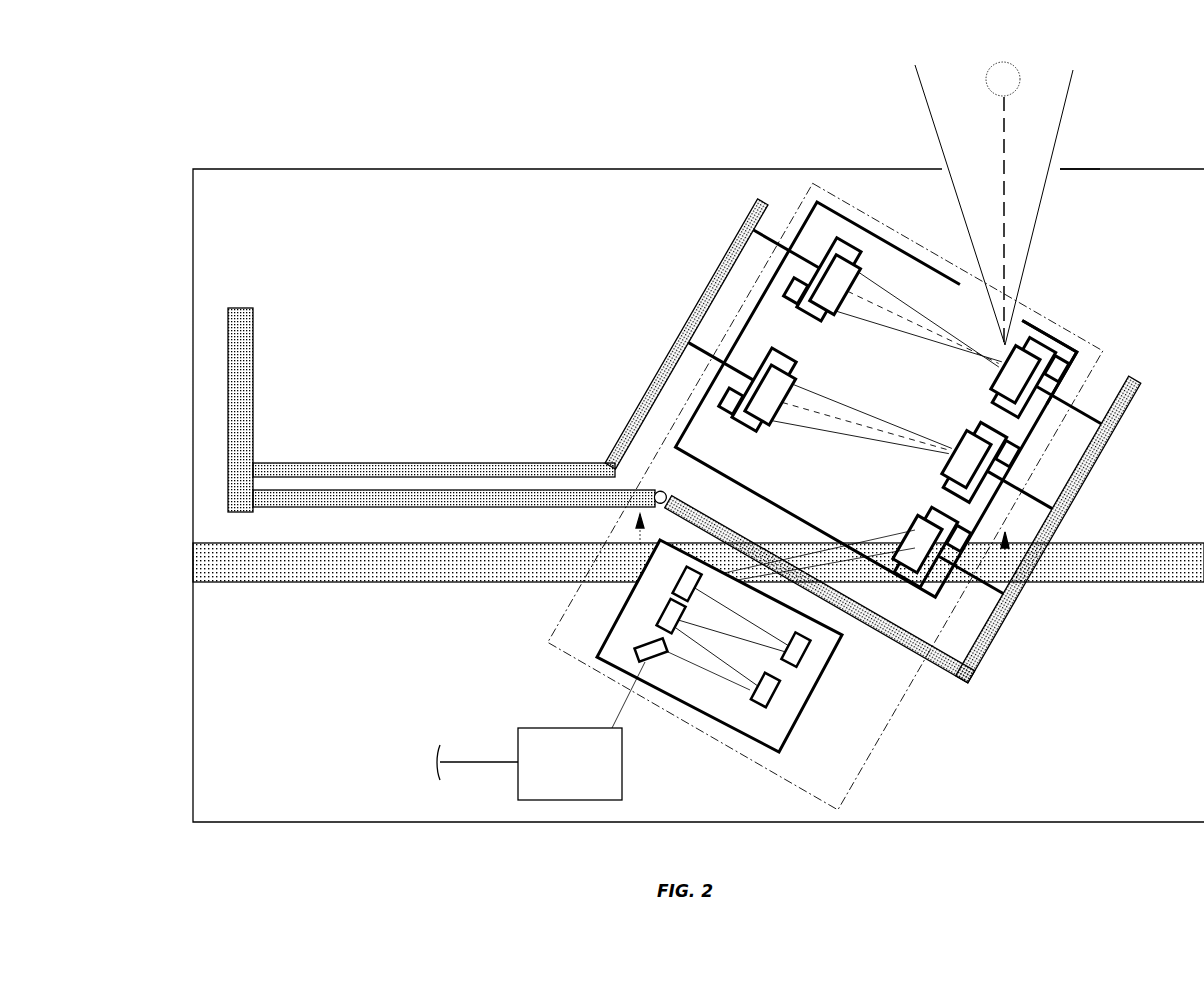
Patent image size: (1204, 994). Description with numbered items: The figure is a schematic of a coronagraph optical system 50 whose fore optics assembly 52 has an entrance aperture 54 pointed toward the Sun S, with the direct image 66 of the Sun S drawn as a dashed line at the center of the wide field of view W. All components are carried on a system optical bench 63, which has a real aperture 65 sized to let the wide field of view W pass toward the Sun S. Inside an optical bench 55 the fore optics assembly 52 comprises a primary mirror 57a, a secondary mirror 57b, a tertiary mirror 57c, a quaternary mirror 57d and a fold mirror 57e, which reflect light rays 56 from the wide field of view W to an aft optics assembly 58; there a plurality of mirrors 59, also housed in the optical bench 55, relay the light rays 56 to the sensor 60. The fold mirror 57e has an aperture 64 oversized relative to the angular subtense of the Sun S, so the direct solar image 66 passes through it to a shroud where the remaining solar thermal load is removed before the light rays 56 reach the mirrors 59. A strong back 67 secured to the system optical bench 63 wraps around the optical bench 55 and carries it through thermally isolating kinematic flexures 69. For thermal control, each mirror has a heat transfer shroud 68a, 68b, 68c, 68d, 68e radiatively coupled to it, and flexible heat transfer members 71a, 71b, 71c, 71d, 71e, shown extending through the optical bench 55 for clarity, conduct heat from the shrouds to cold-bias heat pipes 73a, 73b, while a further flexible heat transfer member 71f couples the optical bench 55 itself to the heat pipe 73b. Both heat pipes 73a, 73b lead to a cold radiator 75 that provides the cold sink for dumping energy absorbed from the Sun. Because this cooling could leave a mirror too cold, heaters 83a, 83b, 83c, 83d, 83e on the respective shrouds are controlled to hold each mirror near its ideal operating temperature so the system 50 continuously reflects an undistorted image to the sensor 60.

The coronagraph optical system 50 is at (535, 124).
The fore optics assembly 52 is at (908, 252).
The entrance aperture 54 is at (1082, 290).
The optical bench 55 is at (563, 637).
The light rays 56 is at (942, 148).
The primary mirror 57a is at (1088, 379).
The secondary mirror 57b is at (756, 248).
The tertiary mirror 57c is at (1069, 515).
The quaternary mirror 57d is at (692, 359).
The fold mirror 57e is at (1022, 611).
The aft optics assembly 58 is at (731, 673).
The aft optics mirrors 59 is at (616, 632).
The sensor 60 is at (518, 736).
The system optical bench 63 is at (332, 169).
The aperture 64 is at (905, 637).
The real aperture 65 is at (1062, 172).
The direct image of the Sun 66 is at (1008, 216).
The strong back 67 is at (260, 582).
The heat transfer shroud 68a is at (1092, 437).
The heat transfer shroud 68b is at (830, 242).
The heat transfer shroud 68c is at (1090, 560).
The heat transfer shroud 68d is at (765, 355).
The heat transfer shroud 68e is at (985, 606).
The thermally isolating kinematic flexures 69 is at (636, 524).
The heat transfer member 71a is at (1138, 393).
The heat transfer member 71b is at (765, 236).
The heat transfer member 71c is at (1082, 482).
The heat transfer member 71d is at (702, 368).
The heat transfer member 71e is at (997, 602).
The flexible heat transfer member 71f is at (613, 462).
The cold-bias heat pipe 73a is at (490, 472).
The cold-bias heat pipe 73b is at (395, 498).
The cold radiator 75 is at (255, 312).
The heater 83a is at (1065, 345).
The heater 83b is at (800, 290).
The heater 83c is at (1010, 446).
The heater 83d is at (745, 405).
The heater 83e is at (1015, 582).
The Sun S is at (986, 78).
The wide field of view W is at (994, 205).